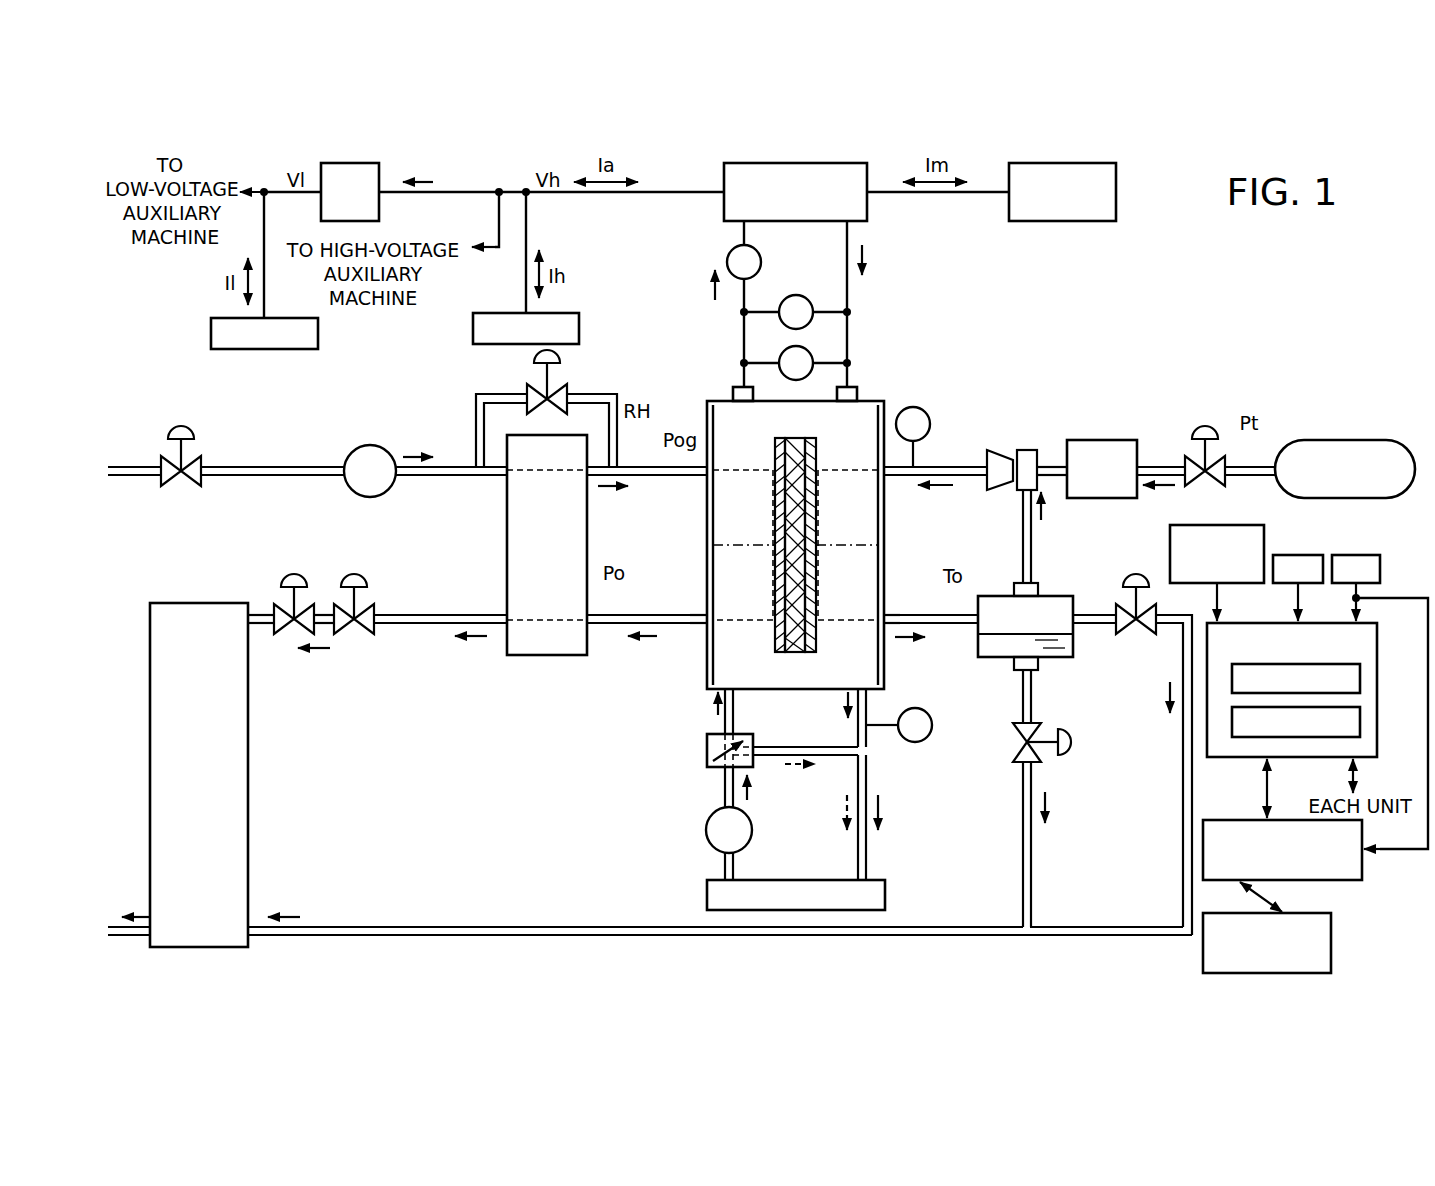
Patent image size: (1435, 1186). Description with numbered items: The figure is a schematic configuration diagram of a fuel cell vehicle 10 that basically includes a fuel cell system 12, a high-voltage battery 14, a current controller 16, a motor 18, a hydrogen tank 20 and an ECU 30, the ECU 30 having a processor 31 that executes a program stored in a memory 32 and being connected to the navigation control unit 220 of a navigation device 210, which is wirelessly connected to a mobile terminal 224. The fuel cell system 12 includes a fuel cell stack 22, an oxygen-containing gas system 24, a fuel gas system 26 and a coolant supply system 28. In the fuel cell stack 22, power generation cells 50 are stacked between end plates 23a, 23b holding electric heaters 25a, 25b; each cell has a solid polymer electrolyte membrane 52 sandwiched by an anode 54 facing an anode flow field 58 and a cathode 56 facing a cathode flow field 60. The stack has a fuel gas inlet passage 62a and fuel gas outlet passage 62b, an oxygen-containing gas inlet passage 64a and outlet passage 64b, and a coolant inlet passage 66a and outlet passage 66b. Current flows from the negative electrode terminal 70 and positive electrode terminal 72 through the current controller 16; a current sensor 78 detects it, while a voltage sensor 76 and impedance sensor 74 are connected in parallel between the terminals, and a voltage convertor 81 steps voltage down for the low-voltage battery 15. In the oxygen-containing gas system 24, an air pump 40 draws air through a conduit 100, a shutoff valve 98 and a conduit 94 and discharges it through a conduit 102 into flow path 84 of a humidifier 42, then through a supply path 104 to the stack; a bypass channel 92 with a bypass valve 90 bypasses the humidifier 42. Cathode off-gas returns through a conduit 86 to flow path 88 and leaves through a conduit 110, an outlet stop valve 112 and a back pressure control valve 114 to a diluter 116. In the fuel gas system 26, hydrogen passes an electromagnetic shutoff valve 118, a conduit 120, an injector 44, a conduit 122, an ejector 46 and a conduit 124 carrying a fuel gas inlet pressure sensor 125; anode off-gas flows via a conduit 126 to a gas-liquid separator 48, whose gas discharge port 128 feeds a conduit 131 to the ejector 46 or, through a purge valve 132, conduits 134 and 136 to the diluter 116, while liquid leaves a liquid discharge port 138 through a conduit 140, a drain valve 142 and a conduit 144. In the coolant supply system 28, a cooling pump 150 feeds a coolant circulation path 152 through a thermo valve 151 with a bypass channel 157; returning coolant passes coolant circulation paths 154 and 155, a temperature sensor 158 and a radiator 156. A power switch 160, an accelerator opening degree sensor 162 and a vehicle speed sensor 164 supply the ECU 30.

The fuel cell vehicle 10 is at (1344, 274).
The fuel cell system 12 is at (1178, 311).
The high-voltage battery 14 is at (579, 332).
The low-voltage battery 15 is at (211, 334).
The current controller 16 is at (867, 208).
The motor 18 is at (1116, 192).
The hydrogen tank 20 is at (1335, 440).
The fuel cell stack 22 is at (707, 538).
The end plate 23a is at (707, 598).
The end plate 23b is at (884, 575).
The oxygen-containing gas system 24 is at (322, 394).
The electric heater 25a is at (713, 674).
The electric heater 25b is at (878, 674).
The fuel gas system 26 is at (1283, 379).
The coolant supply system 28 is at (648, 852).
The ECU 30 is at (1377, 643).
The processor 31 is at (1360, 680).
The memory 32 is at (1360, 723).
The air pump 40 is at (370, 445).
The humidifier 42 is at (507, 546).
The injector 44 is at (1105, 440).
The ejector 46 is at (996, 452).
The gas-liquid separator 48 is at (998, 658).
The power generation cell 50 is at (767, 454).
The solid polymer electrolyte membrane 52 is at (795, 530).
The anode 54 is at (812, 454).
The cathode 56 is at (781, 548).
The anode flow field 58 is at (818, 493).
The cathode flow field 60 is at (773, 493).
The fuel gas inlet passage 62a is at (887, 476).
The fuel gas outlet passage 62b is at (878, 620).
The oxygen-containing gas inlet passage 64a is at (693, 478).
The oxygen-containing gas outlet passage 64b is at (707, 624).
The coolant inlet passage 66a is at (736, 692).
The coolant outlet passage 66b is at (872, 692).
The negative electrode terminal 70 is at (857, 395).
The positive electrode terminal 72 is at (733, 395).
The impedance sensor 74 is at (812, 354).
The voltage sensor 76 is at (803, 296).
The current sensor 78 is at (727, 262).
The voltage convertor 81 is at (379, 208).
The flow path 84 is at (522, 471).
The conduit 86 is at (616, 624).
The flow path 88 is at (520, 615).
The bypass valve 90 is at (534, 364).
The bypass channel 92 is at (478, 396).
The conduit 94 is at (248, 467).
The shutoff valve 98 is at (181, 425).
The conduit 100 is at (136, 475).
The conduit 102 is at (418, 475).
The supply path 104 is at (652, 476).
The conduit 110 is at (429, 624).
The outlet stop valve 112 is at (353, 584).
The back pressure control valve 114 is at (292, 584).
The diluter 116 is at (248, 756).
The electromagnetic shutoff valve 118 is at (1204, 427).
The conduit 120 is at (1168, 467).
The conduit 122 is at (1049, 467).
The conduit 124 is at (935, 443).
The fuel gas inlet pressure sensor 125 is at (912, 407).
The conduit 126 is at (960, 624).
The gas discharge port 128 is at (1038, 586).
The conduit 131 is at (1034, 546).
The purge valve 132 is at (1136, 570).
The conduit 134 is at (1183, 798).
The conduit 136 is at (405, 927).
The liquid discharge port 138 is at (1038, 665).
The conduit 140 is at (1032, 730).
The drain valve 142 is at (1074, 742).
The conduit 144 is at (1032, 849).
The cooling pump 150 is at (706, 830).
The thermo valve 151 is at (707, 751).
The coolant circulation path 152 is at (725, 722).
The coolant circulation path 154 is at (858, 740).
The coolant circulation path 155 is at (868, 786).
The radiator 156 is at (885, 896).
The bypass channel 157 is at (766, 758).
The temperature sensor 158 is at (925, 740).
The power switch 160 is at (1190, 525).
The accelerator opening degree sensor 162 is at (1295, 555).
The vehicle speed sensor 164 is at (1356, 555).
The navigation device 210 is at (1242, 809).
The navigation control unit 220 is at (1362, 875).
The mobile terminal 224 is at (1331, 941).